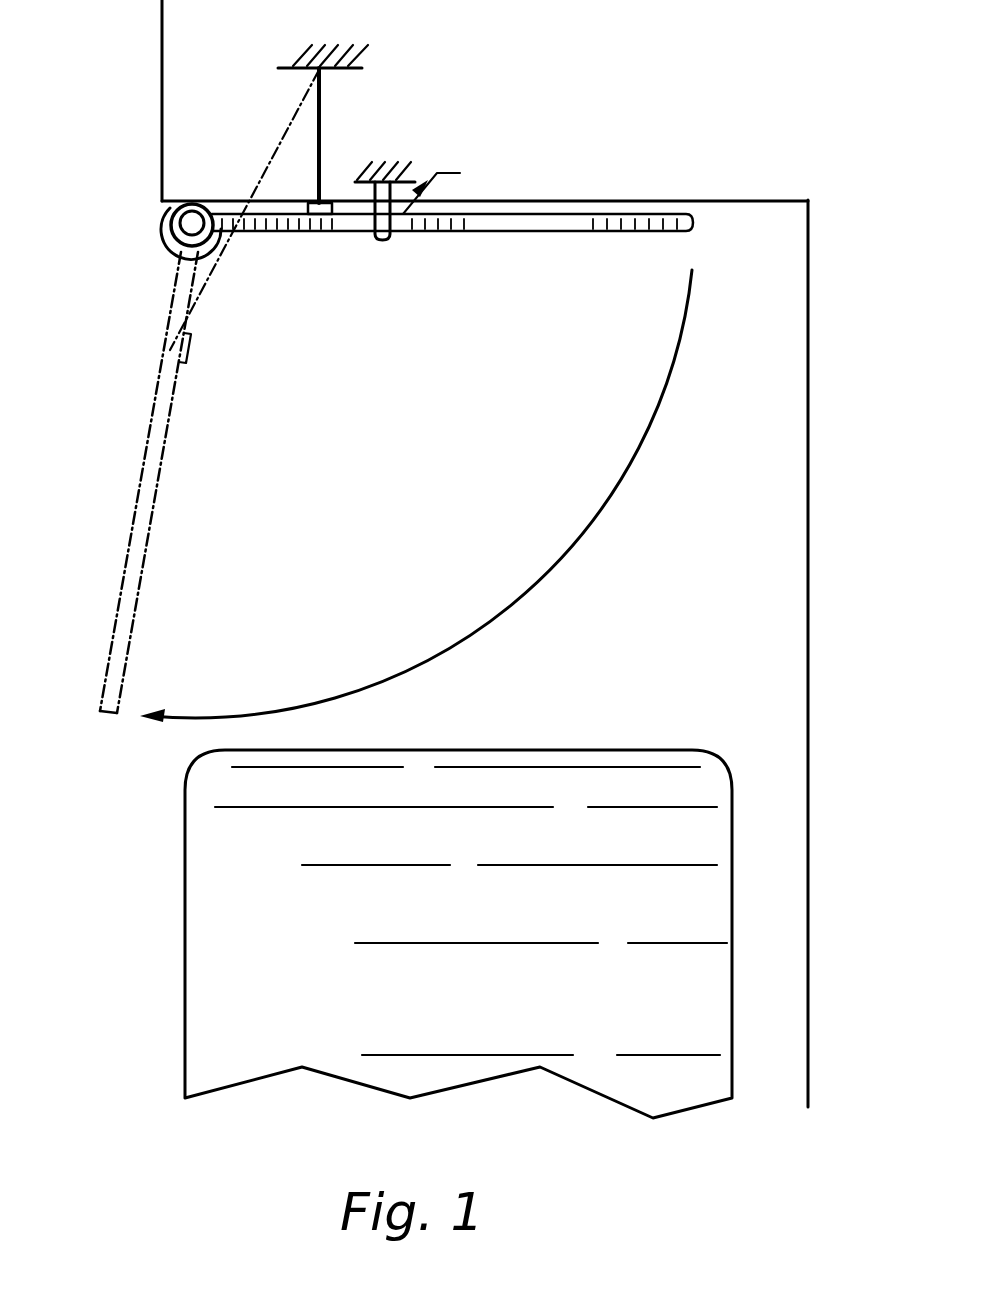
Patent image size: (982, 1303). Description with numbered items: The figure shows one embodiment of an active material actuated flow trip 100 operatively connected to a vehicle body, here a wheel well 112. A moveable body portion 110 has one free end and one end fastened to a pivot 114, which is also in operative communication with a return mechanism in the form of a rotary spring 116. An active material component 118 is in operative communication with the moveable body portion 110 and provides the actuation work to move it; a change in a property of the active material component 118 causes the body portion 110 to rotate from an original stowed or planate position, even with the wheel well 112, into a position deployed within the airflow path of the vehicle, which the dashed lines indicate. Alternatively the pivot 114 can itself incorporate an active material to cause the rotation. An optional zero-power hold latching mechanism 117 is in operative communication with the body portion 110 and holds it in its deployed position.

The active material actuated flow trip 100 is at (598, 203).
The moveable body portion 110 is at (512, 232).
The wheel well 112 is at (745, 199).
The pivot 114 is at (188, 223).
The rotary spring 116 is at (165, 248).
The zero-power hold latching mechanism 117 is at (389, 262).
The active material component 118 is at (322, 130).